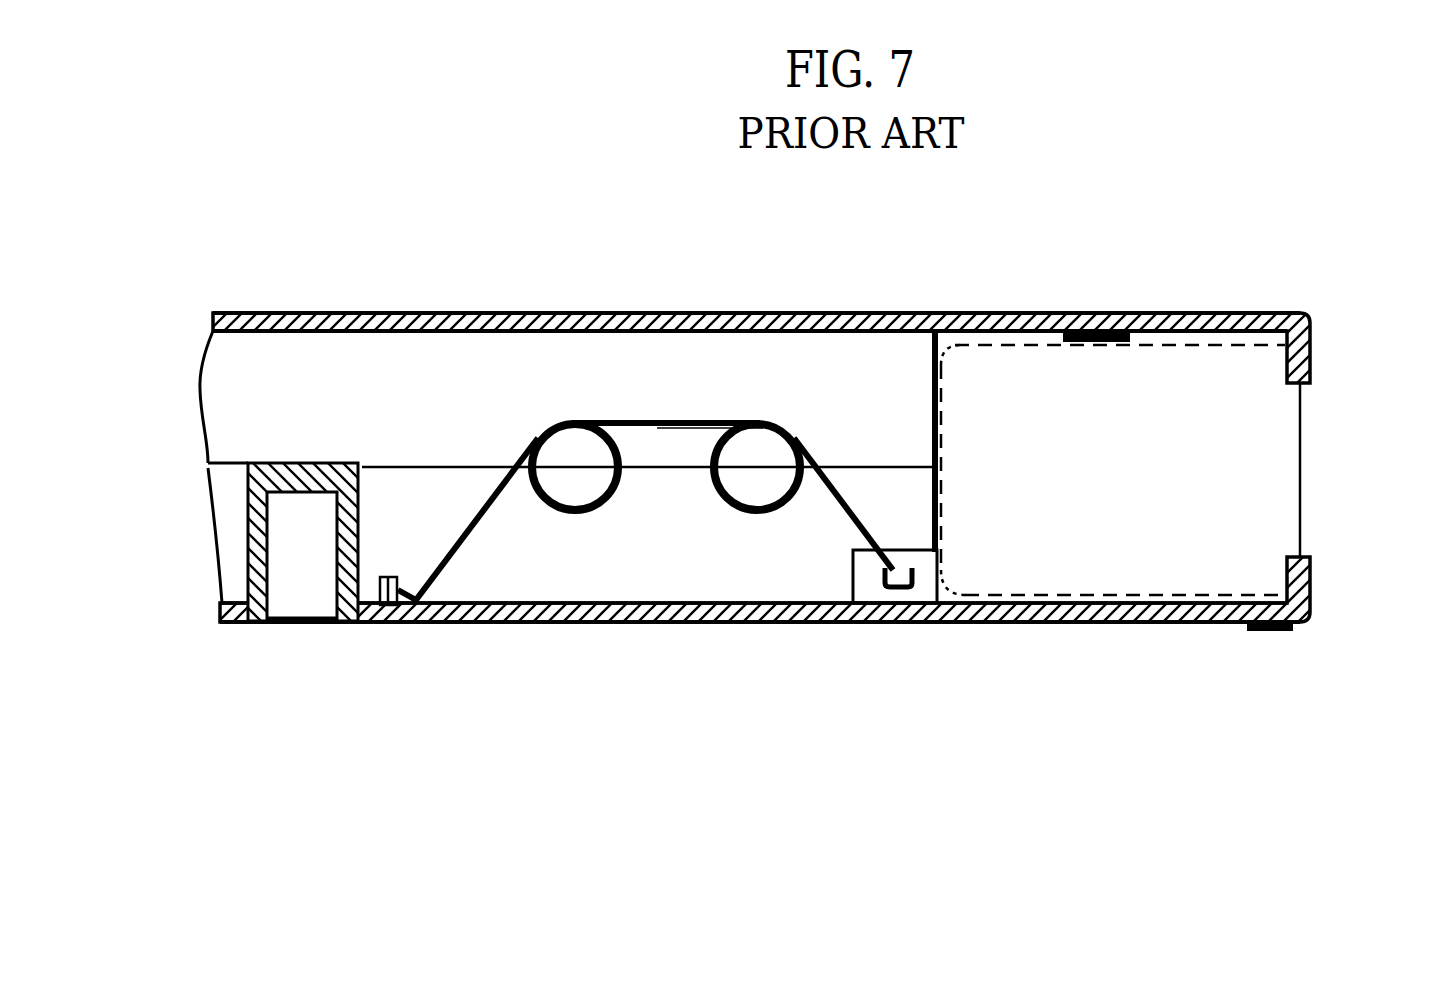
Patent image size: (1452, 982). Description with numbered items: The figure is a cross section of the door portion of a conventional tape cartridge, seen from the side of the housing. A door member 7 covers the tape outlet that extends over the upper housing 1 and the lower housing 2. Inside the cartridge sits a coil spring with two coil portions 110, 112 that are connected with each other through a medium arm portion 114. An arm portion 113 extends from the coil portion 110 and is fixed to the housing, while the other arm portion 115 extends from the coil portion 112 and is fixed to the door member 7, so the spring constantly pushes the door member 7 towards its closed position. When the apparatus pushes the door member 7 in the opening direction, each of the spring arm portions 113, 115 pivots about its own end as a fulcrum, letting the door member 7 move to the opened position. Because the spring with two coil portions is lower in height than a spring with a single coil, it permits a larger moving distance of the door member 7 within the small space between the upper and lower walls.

The upper housing 1 is at (559, 312).
The lower housing 2 is at (622, 623).
The door member 7 is at (1273, 478).
The coil portion 110 is at (580, 418).
The coil portion 112 is at (787, 428).
The arm portion 113 is at (477, 557).
The medium arm portion 114 is at (688, 418).
The arm portion 115 is at (847, 520).